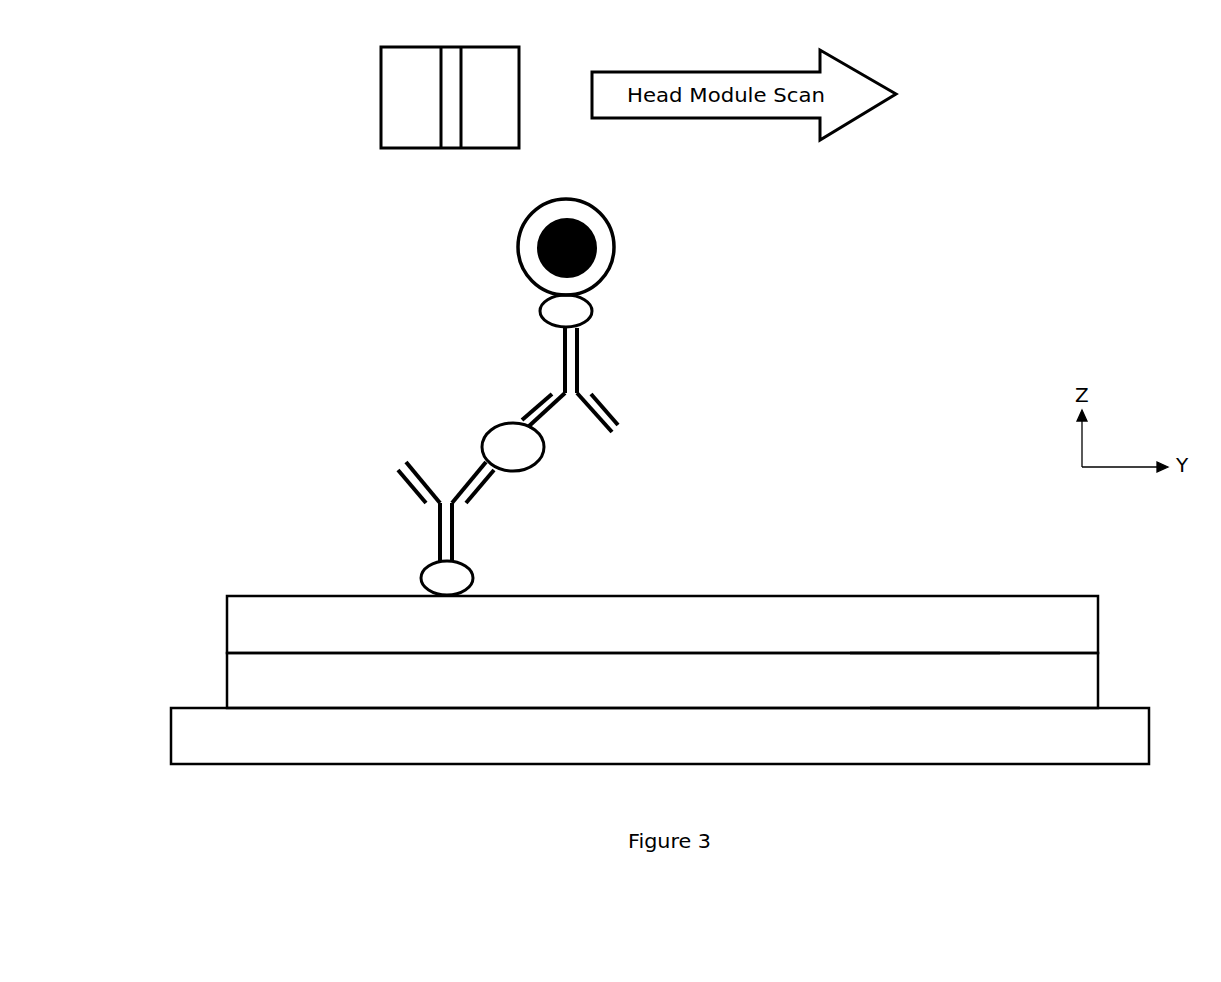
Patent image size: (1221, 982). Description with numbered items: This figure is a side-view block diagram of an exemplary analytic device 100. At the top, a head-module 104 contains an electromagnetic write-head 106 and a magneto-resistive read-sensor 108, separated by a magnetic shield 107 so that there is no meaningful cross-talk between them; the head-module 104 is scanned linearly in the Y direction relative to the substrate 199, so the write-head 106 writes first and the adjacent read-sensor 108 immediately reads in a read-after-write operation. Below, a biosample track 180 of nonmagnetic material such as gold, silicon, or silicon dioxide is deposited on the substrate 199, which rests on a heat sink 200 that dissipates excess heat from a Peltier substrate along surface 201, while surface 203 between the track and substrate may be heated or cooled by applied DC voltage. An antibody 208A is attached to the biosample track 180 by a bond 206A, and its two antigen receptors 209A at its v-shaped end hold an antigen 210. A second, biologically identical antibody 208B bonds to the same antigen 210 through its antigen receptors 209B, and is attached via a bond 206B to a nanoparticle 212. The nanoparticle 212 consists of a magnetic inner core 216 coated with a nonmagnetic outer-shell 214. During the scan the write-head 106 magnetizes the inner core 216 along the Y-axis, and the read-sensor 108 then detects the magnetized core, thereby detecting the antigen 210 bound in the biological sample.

The analytic device 100 is at (1013, 125).
The head-module 104 is at (519, 48).
The electromagnetic write-head 106 is at (484, 97).
The magnetic shield 107 is at (450, 145).
The magneto-resistive read-sensor 108 is at (416, 97).
The biosample track 180 is at (662, 624).
The substrate 199 is at (662, 680).
The heat sink 200 is at (660, 736).
The surface 201 is at (942, 707).
The surface 203 is at (922, 652).
The bond 206A is at (473, 572).
The bond 206B is at (592, 312).
The antibody 208A is at (330, 481).
The antibody 208B is at (625, 388).
The antigen receptor 209A is at (478, 462).
The antigen receptor 209B is at (543, 432).
The antigen 210 is at (543, 457).
The nanoparticle 212 is at (730, 230).
The outer-shell 214 is at (610, 230).
The magnetic inner core 216 is at (597, 255).